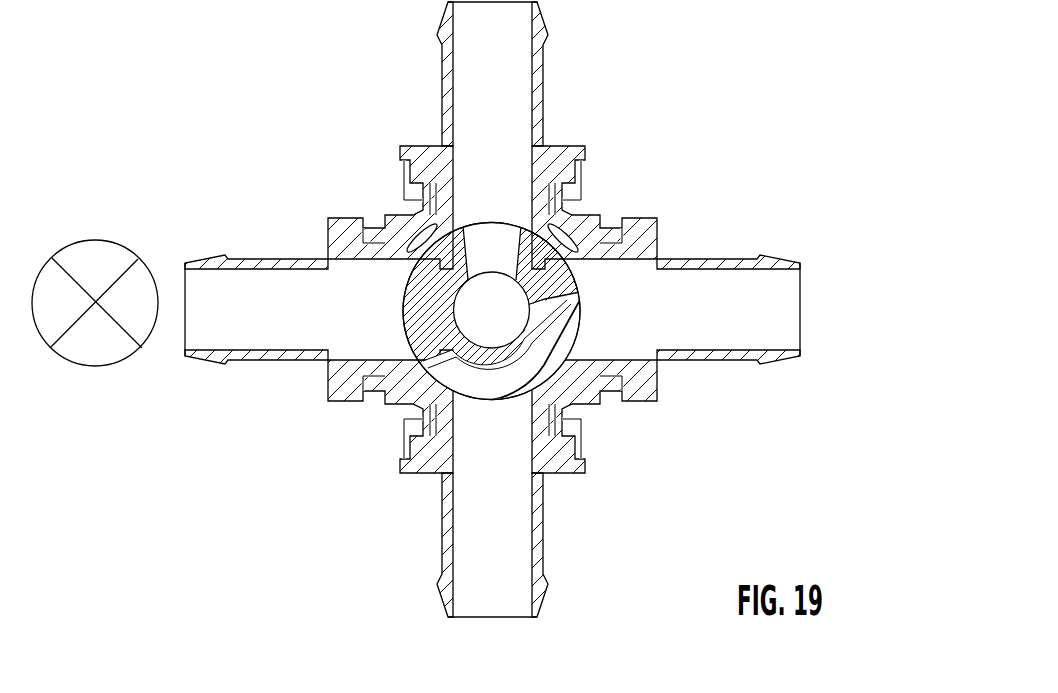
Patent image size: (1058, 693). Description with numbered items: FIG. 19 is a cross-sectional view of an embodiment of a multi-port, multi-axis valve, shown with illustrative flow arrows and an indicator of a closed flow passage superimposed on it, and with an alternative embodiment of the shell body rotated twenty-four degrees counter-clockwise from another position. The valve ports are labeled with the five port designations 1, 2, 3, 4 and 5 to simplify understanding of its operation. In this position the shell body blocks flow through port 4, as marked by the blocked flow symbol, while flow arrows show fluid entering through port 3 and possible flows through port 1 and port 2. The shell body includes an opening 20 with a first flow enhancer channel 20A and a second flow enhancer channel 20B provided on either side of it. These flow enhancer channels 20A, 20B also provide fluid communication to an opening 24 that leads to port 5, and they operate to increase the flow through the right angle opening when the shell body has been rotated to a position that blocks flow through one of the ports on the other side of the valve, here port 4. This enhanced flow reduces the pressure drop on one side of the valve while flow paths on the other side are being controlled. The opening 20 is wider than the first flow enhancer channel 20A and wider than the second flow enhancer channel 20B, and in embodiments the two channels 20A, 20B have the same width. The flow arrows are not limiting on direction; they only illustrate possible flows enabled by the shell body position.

The port 1 is at (488, 488).
The port 2 is at (663, 309).
The port 3 is at (490, 130).
The port 4 is at (313, 309).
The port 5 is at (462, 235).
The opening 20 is at (483, 243).
The first flow enhancer channel 20A is at (414, 253).
The second flow enhancer channel 20B is at (572, 235).
The opening 24 is at (490, 332).